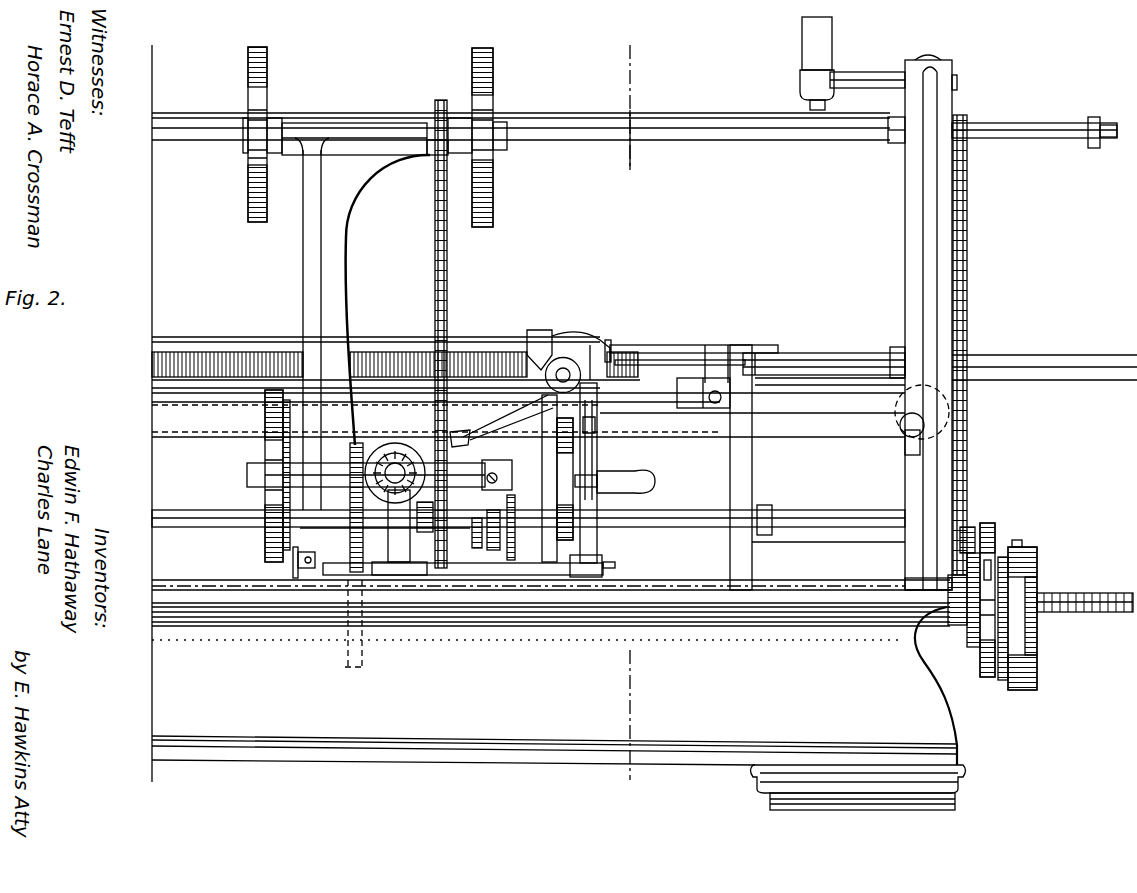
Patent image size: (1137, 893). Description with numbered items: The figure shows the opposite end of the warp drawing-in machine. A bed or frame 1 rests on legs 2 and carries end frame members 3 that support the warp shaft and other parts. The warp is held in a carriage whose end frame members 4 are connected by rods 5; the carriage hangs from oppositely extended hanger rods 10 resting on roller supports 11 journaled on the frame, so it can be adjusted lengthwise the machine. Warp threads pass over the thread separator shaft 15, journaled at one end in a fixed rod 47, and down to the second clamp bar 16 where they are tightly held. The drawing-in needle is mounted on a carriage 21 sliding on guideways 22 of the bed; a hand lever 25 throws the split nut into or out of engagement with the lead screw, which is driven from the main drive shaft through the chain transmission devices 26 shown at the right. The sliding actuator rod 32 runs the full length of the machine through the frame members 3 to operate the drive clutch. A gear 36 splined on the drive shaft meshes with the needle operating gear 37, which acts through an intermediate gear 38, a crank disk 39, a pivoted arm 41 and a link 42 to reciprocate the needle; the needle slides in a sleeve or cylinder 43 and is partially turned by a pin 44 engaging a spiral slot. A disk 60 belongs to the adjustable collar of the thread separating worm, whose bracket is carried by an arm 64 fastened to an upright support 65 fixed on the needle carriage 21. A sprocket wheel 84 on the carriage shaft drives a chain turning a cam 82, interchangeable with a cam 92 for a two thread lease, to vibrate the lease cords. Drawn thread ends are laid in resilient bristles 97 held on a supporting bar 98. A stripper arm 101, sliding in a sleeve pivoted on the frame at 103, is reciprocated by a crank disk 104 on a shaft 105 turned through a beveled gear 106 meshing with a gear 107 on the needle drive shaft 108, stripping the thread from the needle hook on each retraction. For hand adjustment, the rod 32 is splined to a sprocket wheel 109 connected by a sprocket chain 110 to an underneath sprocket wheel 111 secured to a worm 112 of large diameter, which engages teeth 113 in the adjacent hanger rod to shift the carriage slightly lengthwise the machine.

The bed or frame 1 is at (935, 716).
The legs 2 is at (960, 800).
The end frame members 3 is at (905, 228).
The end frame members 4 is at (748, 483).
The rods 5 is at (658, 17).
The hanger rods 10 is at (1033, 375).
The roller supports 11 is at (905, 410).
The thread separator shaft 15 is at (700, 353).
The second clamp bar 16 is at (828, 542).
The carriage 21 is at (555, 590).
The guideways 22 is at (685, 600).
The hand lever 25 is at (293, 572).
The chain transmission devices 26 is at (1034, 615).
The sliding actuator rod 32 is at (1018, 140).
The gear 36 is at (365, 667).
The needle operating gear 37 is at (355, 560).
The intermediate gear 38 is at (352, 445).
The crank disk 39 is at (575, 512).
The pivoted arm 41 is at (597, 458).
The link 42 is at (598, 410).
The sleeve or cylinder 43 is at (575, 362).
The pin 44 is at (538, 358).
The rod 47 is at (855, 355).
The disk 60 is at (612, 343).
The arm 64 is at (565, 338).
The upright support 65 is at (545, 328).
The cam 82 is at (497, 545).
The sprocket wheel 84 is at (508, 548).
The cam 92 is at (476, 545).
The resilient bristles 97 is at (370, 360).
The supporting bar 98 is at (218, 375).
The stripper arm 101 is at (515, 425).
The pivot 103 is at (458, 440).
The crank disk 104 is at (397, 445).
The shaft 105 is at (350, 497).
The beveled gear 106 is at (292, 465).
The gear 107 is at (455, 512).
The needle drive shaft 108 is at (465, 478).
The sprocket wheel 109 is at (968, 118).
The sprocket chain 110 is at (968, 283).
The sprocket wheel 111 is at (968, 540).
The worm 112 is at (975, 547).
The teeth 113 is at (1065, 595).